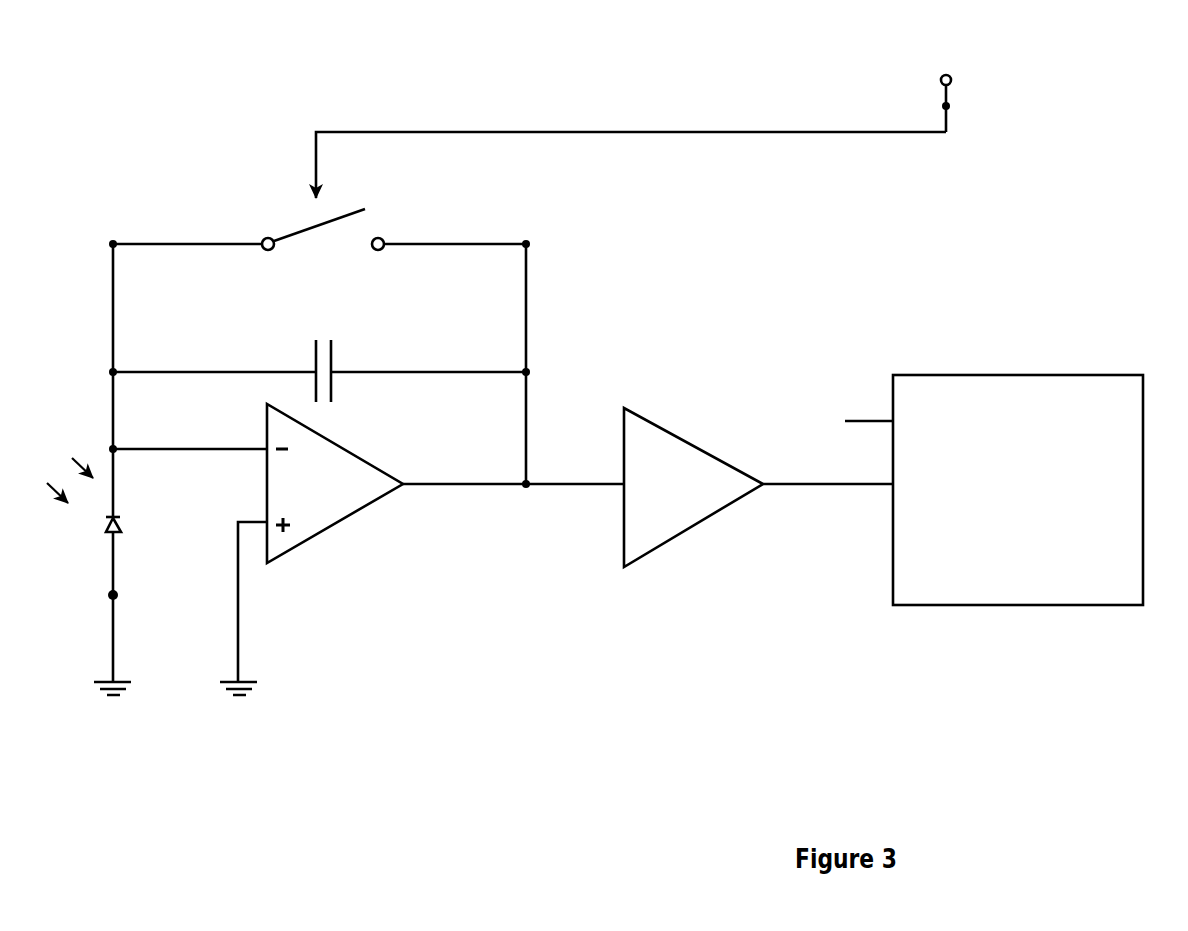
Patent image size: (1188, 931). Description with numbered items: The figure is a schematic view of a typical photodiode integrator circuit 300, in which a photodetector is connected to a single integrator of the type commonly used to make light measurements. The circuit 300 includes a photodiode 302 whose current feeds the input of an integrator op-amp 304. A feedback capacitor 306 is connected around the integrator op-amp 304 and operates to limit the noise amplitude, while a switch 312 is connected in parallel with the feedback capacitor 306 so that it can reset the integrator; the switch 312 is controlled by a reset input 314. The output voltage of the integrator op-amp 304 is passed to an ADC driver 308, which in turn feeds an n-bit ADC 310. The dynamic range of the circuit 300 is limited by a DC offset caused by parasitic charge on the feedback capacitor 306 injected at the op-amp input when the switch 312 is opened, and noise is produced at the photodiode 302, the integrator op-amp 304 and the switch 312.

The photodiode integrator circuit 300 is at (702, 299).
The photodiode 302 is at (82, 534).
The integrator op-amp 304 is at (340, 501).
The feedback capacitor 306 is at (370, 391).
The ADC driver 308 is at (700, 504).
The n-bit ADC 310 is at (997, 538).
The switch 312 is at (230, 253).
The reset input 314 is at (996, 59).